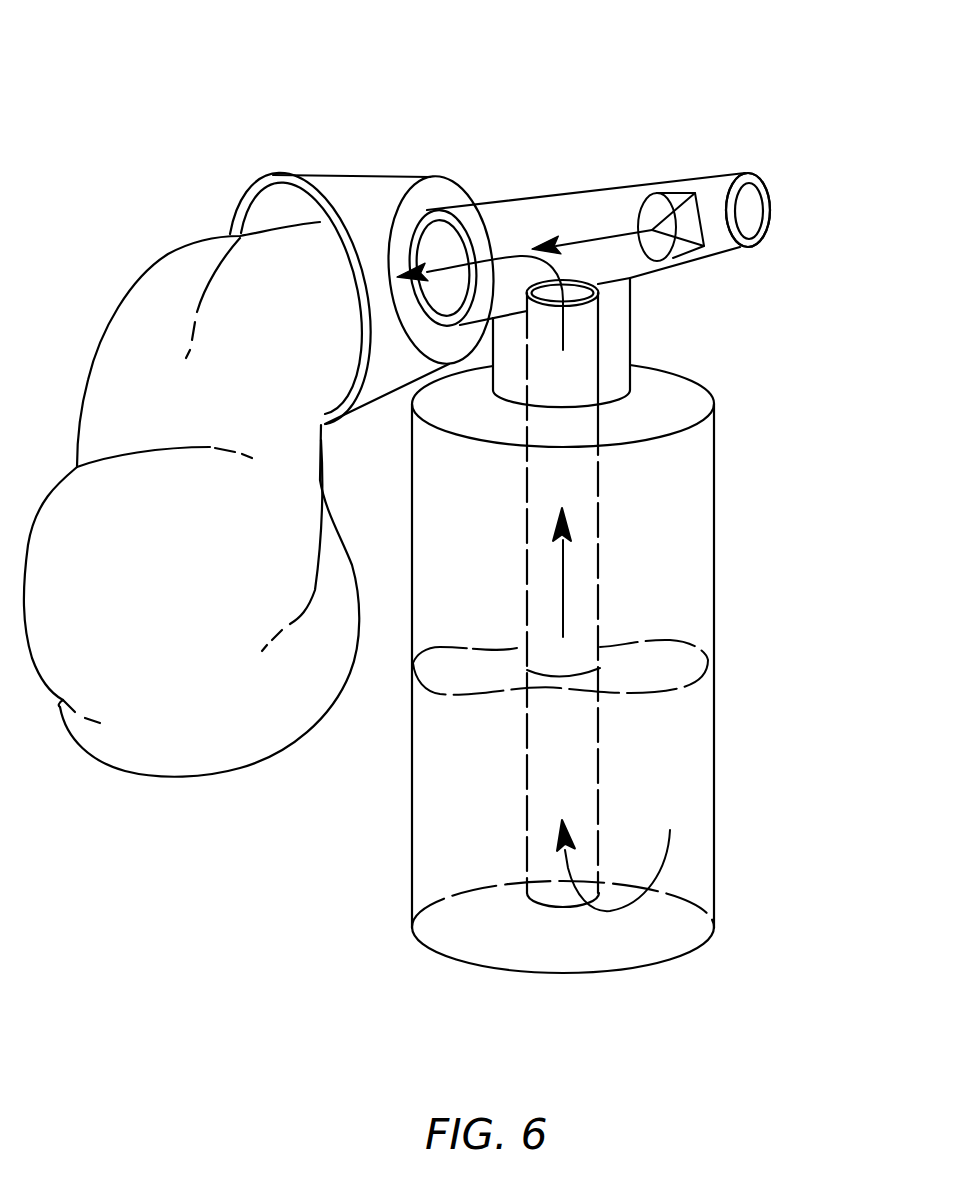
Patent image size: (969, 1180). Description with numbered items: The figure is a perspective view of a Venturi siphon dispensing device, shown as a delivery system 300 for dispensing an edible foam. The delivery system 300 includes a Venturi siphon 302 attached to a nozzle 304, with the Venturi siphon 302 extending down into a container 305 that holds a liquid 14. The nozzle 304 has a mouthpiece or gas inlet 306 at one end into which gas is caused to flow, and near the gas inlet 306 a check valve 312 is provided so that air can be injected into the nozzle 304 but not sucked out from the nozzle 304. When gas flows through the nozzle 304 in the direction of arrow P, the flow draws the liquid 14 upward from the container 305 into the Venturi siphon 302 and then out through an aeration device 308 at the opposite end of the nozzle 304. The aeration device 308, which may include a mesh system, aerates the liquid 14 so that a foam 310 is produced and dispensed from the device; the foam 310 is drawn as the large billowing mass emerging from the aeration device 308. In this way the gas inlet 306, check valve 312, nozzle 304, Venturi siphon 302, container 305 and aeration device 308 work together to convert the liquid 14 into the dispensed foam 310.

The delivery system 300 is at (228, 121).
The aeration device 308 is at (365, 183).
The nozzle 304 is at (527, 193).
The gas inlet 306 is at (780, 203).
The check valve 312 is at (708, 173).
The arrow P is at (607, 262).
The Venturi siphon 302 is at (641, 317).
The liquid 14 is at (637, 800).
The container 305 is at (723, 907).
The foam 310 is at (247, 793).